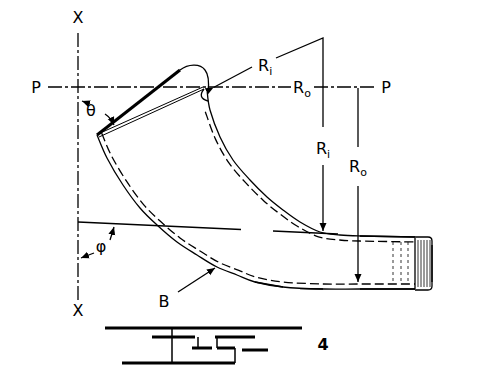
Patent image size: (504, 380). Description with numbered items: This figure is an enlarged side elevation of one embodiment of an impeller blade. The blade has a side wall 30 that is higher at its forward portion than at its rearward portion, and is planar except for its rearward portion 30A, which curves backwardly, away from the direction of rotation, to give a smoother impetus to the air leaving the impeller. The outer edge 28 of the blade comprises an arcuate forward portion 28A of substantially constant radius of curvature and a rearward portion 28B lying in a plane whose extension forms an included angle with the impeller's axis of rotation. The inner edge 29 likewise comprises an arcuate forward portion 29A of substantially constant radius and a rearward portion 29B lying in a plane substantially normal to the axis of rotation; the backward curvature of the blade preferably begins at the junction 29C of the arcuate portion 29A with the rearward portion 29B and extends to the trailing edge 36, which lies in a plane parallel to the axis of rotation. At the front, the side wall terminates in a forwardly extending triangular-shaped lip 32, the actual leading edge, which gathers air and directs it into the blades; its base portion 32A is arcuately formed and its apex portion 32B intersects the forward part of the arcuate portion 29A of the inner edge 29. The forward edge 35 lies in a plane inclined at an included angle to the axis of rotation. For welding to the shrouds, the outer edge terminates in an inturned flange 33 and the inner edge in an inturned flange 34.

The outer edge 28 is at (237, 158).
The arcuate forward portion of outer edge 28A is at (263, 199).
The rearward portion of outer edge 28B is at (387, 236).
The inner edge 29 is at (126, 195).
The arcuate forward portion of inner edge 29A is at (190, 249).
The rearward portion of inner edge 29B is at (411, 290).
The junction 29C is at (320, 290).
The side wall 30 is at (208, 232).
The rearward portion of side wall 30A is at (393, 273).
The lip 32 is at (179, 70).
The base portion of lip 32A is at (198, 67).
The apex portion of lip 32B is at (134, 121).
The inturned flange 33 is at (420, 237).
The inturned flange 34 is at (262, 281).
The forward edge 35 is at (212, 103).
The trailing edge 36 is at (436, 262).